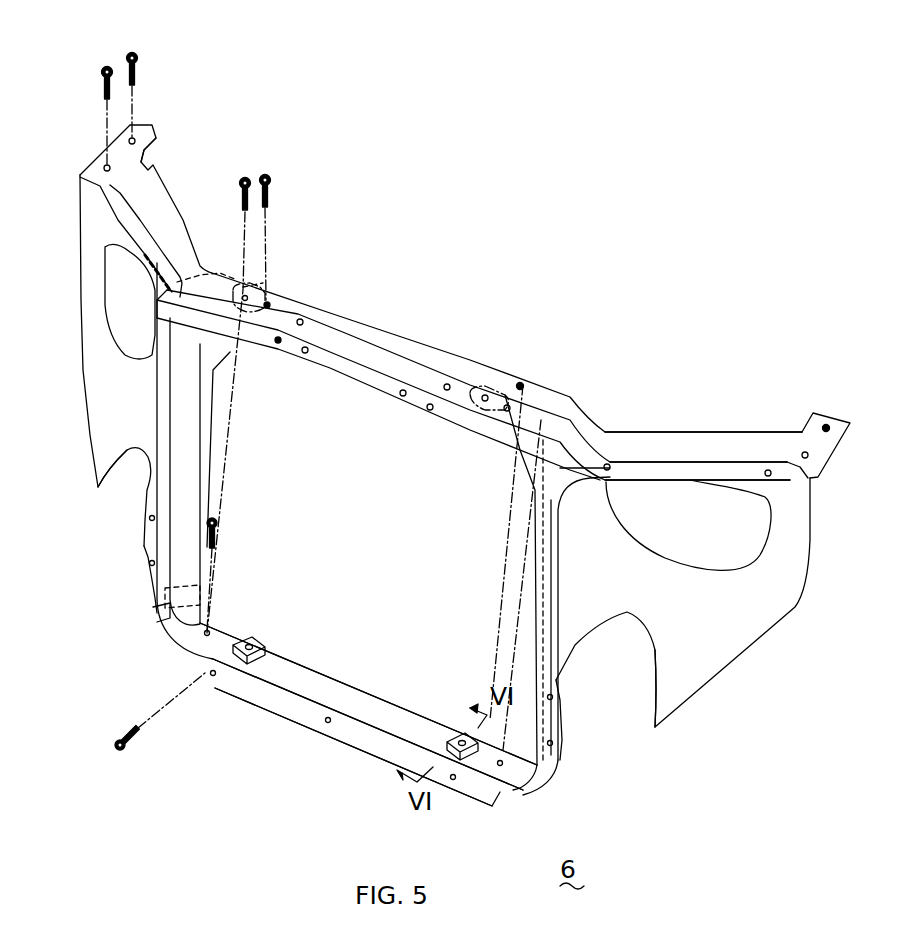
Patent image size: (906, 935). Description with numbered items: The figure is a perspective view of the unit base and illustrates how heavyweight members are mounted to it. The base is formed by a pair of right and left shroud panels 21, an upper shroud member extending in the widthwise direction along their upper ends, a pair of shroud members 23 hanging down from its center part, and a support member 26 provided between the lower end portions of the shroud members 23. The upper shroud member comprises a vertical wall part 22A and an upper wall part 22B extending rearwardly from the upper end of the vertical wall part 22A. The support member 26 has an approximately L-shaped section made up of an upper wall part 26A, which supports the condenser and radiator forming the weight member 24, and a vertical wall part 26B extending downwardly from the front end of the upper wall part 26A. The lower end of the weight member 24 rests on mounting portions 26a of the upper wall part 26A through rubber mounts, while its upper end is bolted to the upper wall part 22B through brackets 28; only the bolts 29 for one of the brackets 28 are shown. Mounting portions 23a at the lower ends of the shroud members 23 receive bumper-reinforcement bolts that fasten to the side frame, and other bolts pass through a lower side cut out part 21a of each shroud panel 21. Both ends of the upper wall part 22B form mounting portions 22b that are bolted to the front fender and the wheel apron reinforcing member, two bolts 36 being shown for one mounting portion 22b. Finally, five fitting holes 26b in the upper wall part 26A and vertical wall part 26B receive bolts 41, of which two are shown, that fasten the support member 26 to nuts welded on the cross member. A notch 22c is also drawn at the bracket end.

The shroud panel 21 is at (80, 377).
The lower side cut out part 21a is at (128, 473).
The vertical wall part 22A is at (698, 477).
The upper wall part 22B is at (660, 430).
The mounting portion 22b is at (135, 145).
The notch 22c is at (155, 150).
The shroud member 23 is at (156, 393).
The mounting portion 23a is at (143, 545).
The weight member 24 is at (417, 337).
The support member 26 is at (288, 704).
The upper wall part 26A is at (320, 686).
The vertical wall part 26B is at (386, 736).
The mounting portion 26a is at (260, 637).
The fitting hole 26b is at (212, 630).
The bracket 28 is at (303, 298).
The bolt 29 is at (246, 180).
The bolt 36 is at (108, 66).
The bolt 41 is at (220, 512).